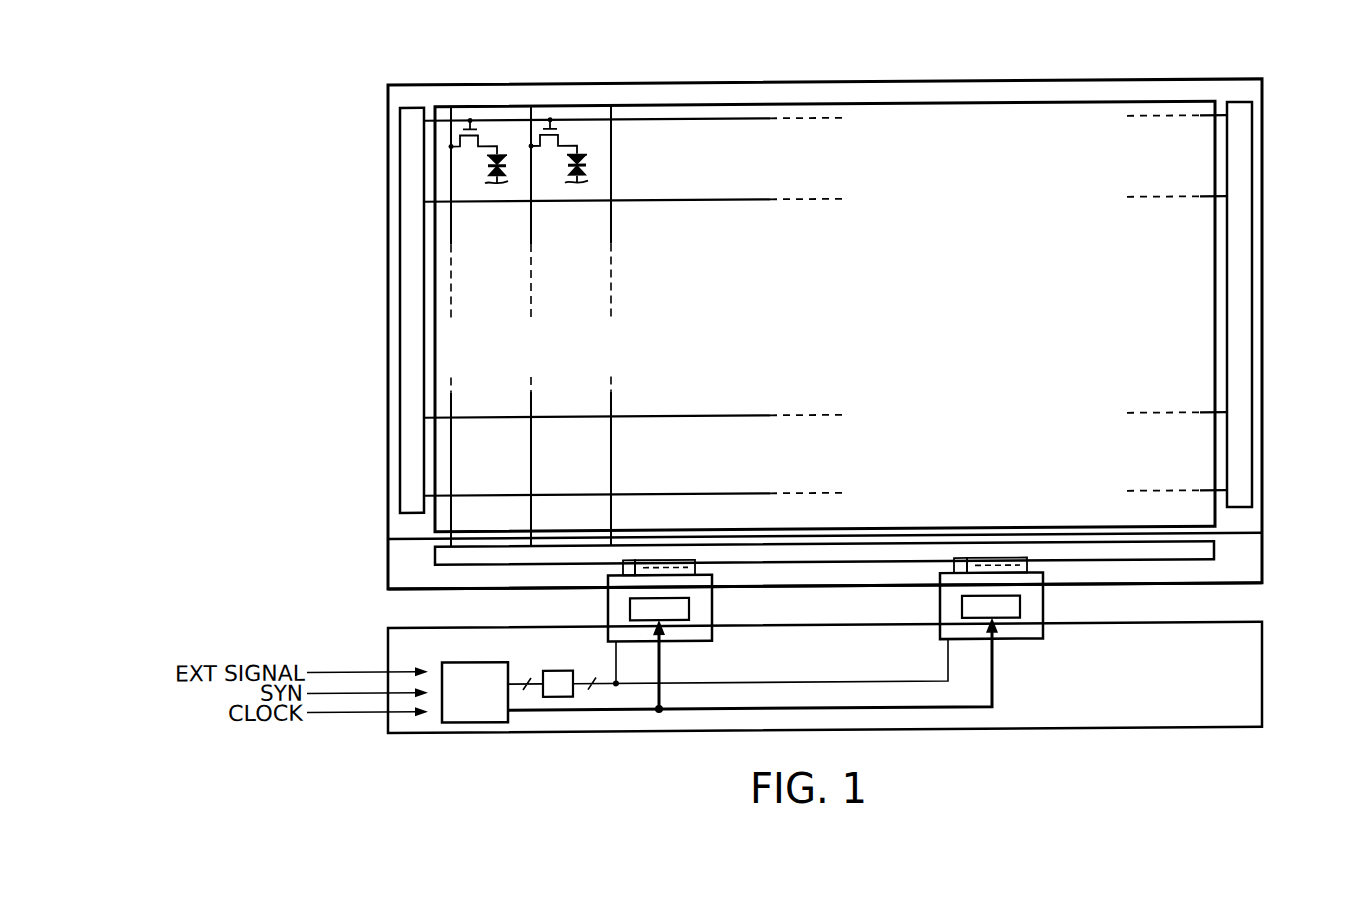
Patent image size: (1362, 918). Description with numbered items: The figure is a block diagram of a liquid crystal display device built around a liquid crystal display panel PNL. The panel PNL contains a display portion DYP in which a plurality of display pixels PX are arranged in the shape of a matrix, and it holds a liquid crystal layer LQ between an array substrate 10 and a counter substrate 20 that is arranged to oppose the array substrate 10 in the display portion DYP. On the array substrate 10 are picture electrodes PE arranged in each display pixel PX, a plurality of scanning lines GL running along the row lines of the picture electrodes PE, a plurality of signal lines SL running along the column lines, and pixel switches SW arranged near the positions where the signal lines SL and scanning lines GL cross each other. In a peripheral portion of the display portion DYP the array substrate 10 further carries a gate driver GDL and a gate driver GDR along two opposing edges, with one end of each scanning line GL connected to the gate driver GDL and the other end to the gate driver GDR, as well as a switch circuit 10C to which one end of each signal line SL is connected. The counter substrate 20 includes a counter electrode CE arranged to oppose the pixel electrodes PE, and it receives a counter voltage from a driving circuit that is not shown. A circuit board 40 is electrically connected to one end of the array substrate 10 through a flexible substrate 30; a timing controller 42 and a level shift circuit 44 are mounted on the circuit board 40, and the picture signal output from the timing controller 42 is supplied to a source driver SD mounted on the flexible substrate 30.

The liquid crystal display panel PNL is at (1276, 256).
The array substrate 10 is at (390, 564).
The counter substrate 20 is at (390, 522).
The switch circuit 10C is at (1216, 551).
The display portion DYP is at (804, 100).
The gate driver GDL is at (413, 118).
The gate driver GDR is at (1240, 118).
The scanning line GL is at (698, 201).
The signal line SL is at (454, 226).
The display pixel PX is at (551, 114).
The pixel switch SW is at (486, 138).
The picture electrode PE is at (583, 147).
The liquid crystal layer LQ is at (588, 165).
The counter electrode CE is at (589, 183).
The flexible substrate 30 is at (607, 609).
The source driver SD is at (712, 609).
The circuit board 40 is at (387, 723).
The timing controller 42 is at (468, 724).
The level shift circuit 44 is at (558, 699).